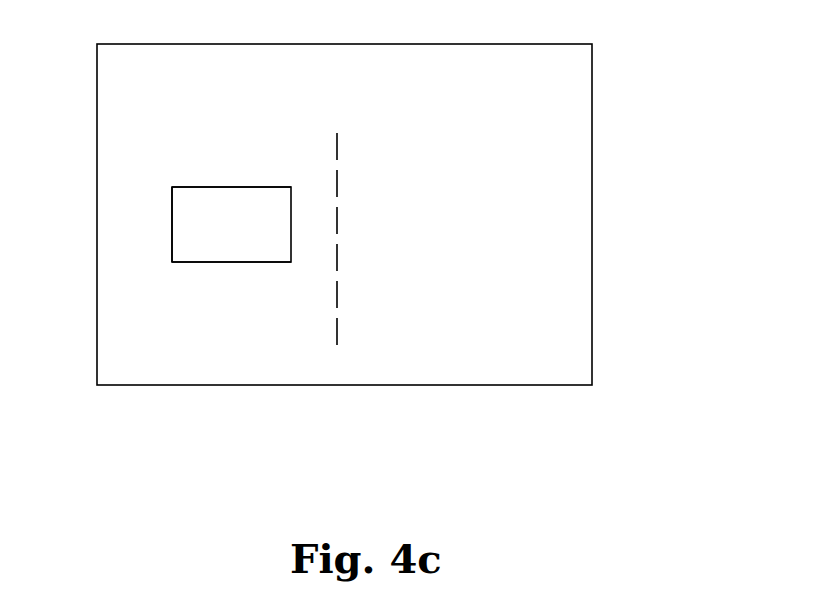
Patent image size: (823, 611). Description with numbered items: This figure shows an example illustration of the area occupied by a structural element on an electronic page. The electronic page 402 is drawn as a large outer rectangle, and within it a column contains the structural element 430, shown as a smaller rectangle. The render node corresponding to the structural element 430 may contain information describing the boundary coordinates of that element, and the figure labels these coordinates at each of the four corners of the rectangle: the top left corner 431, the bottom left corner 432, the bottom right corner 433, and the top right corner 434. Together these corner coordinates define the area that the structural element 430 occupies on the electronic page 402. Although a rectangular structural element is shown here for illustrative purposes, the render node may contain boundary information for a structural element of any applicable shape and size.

The electronic page 402 is at (592, 44).
The structural element 430 is at (240, 187).
The top left corner 431 is at (172, 187).
The bottom left corner 432 is at (172, 262).
The bottom right corner 433 is at (291, 262).
The top right corner 434 is at (291, 187).